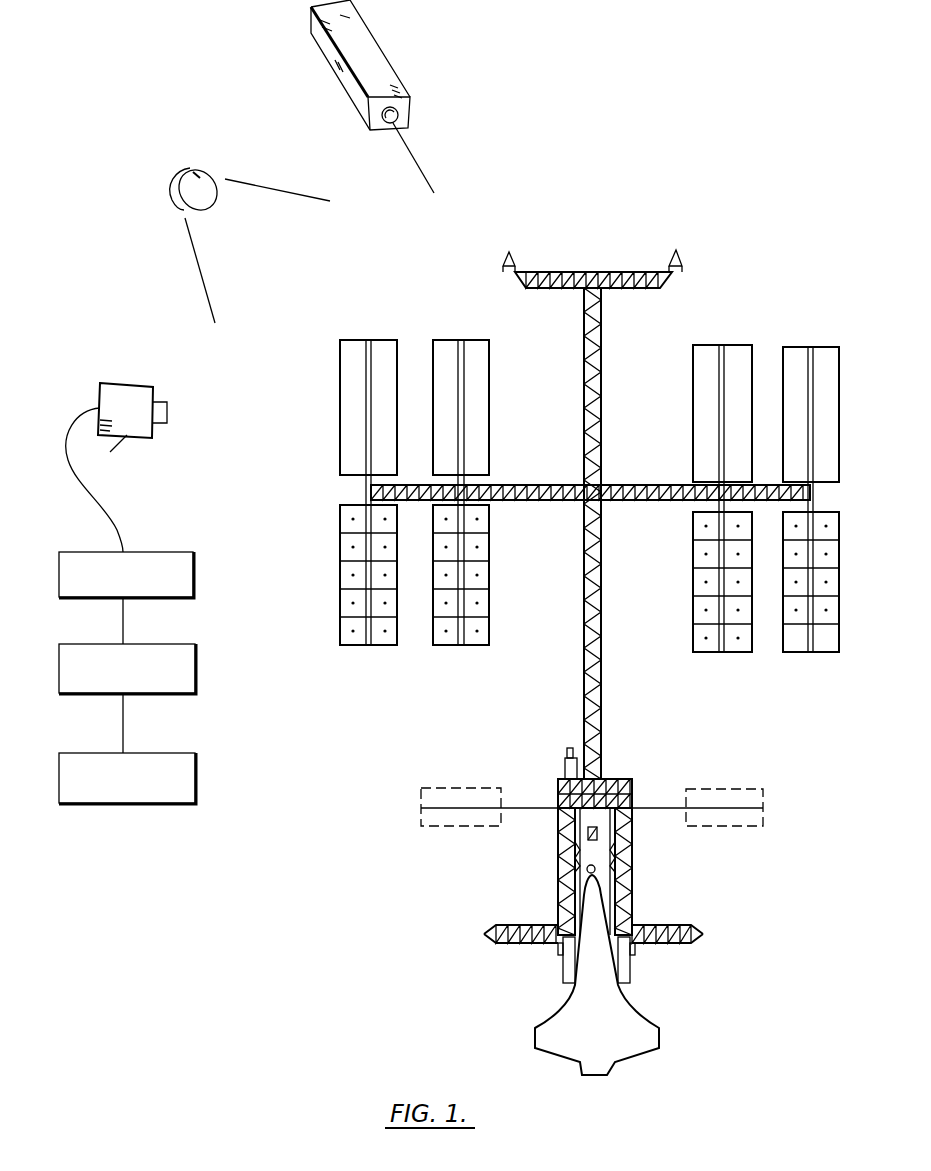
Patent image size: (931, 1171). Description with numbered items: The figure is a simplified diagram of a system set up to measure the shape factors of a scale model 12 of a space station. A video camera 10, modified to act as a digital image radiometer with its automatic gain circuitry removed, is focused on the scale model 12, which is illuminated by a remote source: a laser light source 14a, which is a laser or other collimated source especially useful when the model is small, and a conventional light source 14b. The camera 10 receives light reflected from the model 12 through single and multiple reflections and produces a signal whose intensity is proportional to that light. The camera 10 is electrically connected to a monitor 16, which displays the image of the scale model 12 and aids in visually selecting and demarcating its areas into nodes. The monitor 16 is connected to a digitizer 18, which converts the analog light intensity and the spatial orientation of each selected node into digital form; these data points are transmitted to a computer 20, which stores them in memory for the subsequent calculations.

The video camera 10 is at (132, 385).
The scale model 12 is at (597, 272).
The laser light source 14a is at (378, 60).
The conventional light source 14b is at (172, 193).
The monitor 16 is at (197, 570).
The digitizer 18 is at (197, 672).
The computer 20 is at (198, 780).